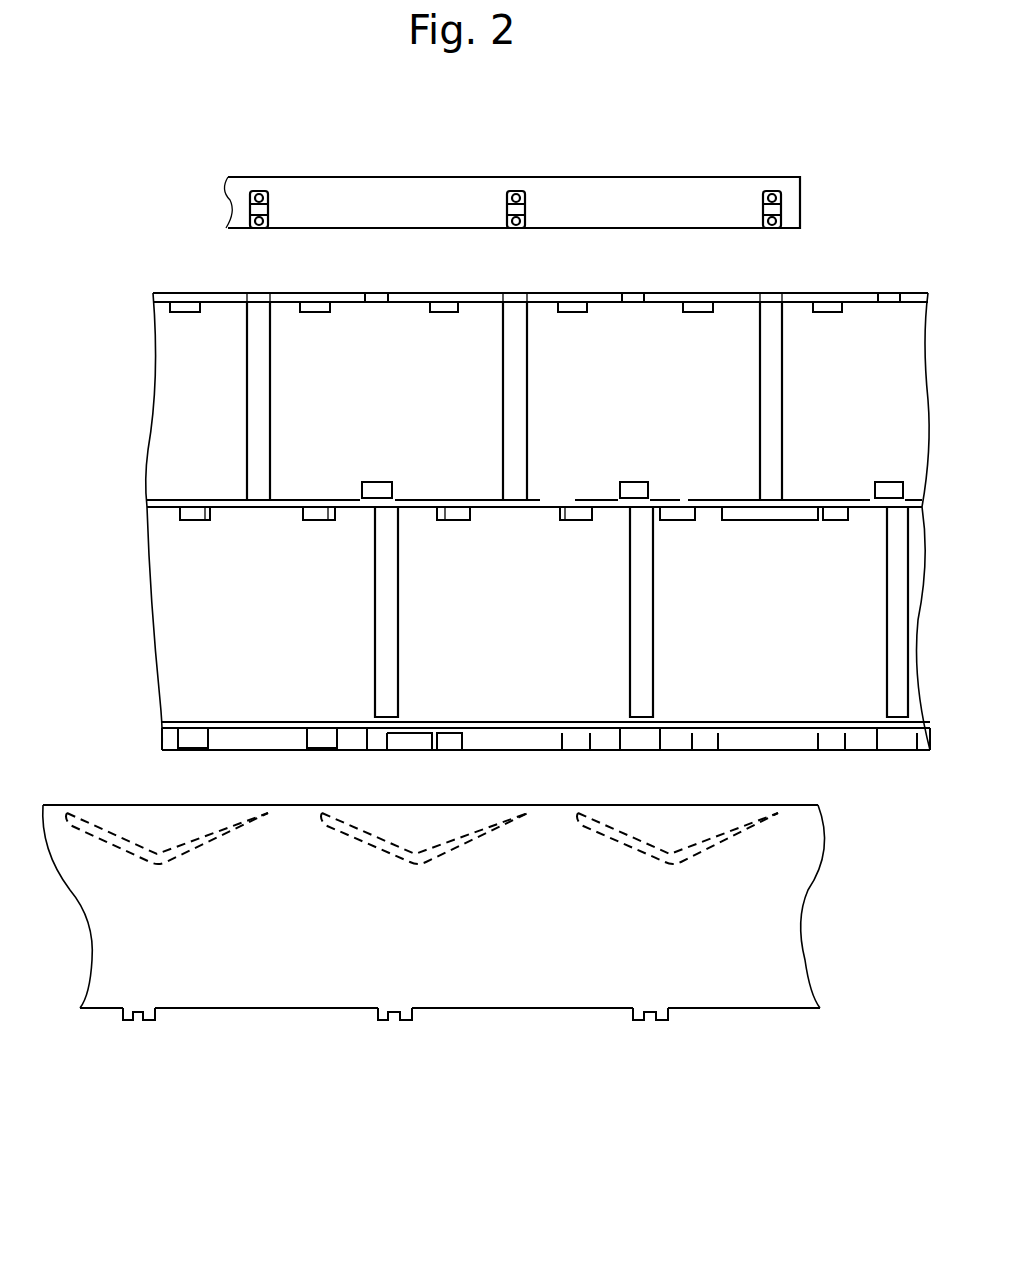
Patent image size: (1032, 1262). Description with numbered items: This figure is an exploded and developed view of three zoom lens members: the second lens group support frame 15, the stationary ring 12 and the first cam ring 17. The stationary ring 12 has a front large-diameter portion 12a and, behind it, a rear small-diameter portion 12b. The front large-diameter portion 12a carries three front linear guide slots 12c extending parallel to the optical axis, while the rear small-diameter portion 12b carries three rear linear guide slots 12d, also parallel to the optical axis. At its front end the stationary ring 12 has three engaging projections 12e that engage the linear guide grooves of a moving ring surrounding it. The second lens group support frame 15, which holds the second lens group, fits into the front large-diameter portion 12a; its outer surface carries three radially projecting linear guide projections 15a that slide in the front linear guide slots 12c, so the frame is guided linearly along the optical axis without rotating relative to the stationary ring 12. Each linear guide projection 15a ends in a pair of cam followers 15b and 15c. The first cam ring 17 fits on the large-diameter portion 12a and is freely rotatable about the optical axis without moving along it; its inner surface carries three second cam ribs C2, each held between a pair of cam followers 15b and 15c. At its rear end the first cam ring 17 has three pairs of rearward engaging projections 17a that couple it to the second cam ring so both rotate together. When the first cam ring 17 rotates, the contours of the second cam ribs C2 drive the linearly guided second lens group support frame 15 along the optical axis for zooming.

The stationary ring 12 is at (97, 388).
The front large-diameter portion 12a is at (160, 430).
The rear small-diameter portion 12b is at (160, 575).
The front linear guide slots 12c is at (270, 388).
The rear linear guide slots 12d is at (396, 602).
The engaging projections 12e is at (378, 302).
The second lens group support frame 15 is at (597, 190).
The linear guide projections 15a is at (510, 210).
The cam follower 15b is at (516, 192).
The cam follower 15c is at (515, 228).
The first cam ring 17 is at (770, 917).
The engaging projections 17a is at (140, 1020).
The second cam ribs C2 is at (195, 852).